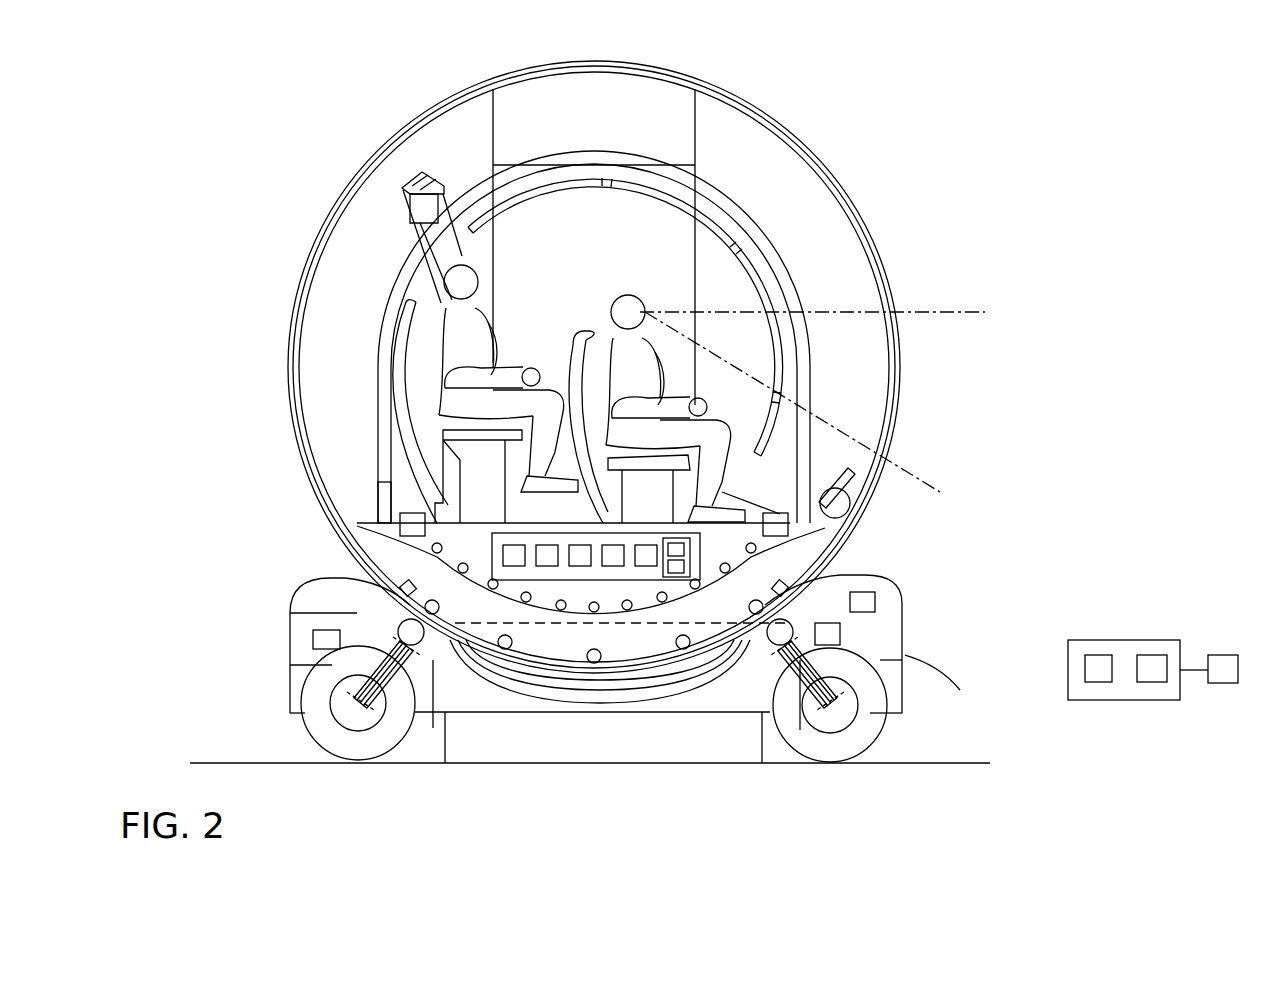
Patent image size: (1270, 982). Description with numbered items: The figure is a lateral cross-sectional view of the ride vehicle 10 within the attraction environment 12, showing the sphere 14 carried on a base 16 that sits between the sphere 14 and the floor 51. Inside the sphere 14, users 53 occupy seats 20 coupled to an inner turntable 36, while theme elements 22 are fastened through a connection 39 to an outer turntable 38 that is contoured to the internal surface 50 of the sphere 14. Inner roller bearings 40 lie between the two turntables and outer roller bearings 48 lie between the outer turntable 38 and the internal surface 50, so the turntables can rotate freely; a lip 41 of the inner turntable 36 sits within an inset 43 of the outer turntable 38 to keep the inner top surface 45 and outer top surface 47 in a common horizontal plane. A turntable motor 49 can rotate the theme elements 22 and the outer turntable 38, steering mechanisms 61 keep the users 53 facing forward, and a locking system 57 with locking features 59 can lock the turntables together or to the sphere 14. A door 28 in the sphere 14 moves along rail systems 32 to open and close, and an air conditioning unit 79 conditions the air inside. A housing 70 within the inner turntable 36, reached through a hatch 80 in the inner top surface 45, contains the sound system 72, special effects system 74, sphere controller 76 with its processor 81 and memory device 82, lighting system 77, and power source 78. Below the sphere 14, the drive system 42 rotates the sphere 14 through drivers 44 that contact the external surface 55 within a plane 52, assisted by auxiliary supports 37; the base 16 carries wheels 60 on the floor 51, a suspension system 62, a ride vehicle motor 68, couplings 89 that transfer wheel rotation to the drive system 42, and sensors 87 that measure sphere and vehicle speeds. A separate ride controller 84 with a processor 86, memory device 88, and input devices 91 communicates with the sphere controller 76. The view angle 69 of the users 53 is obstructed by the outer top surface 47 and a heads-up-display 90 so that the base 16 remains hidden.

The ride vehicle 10 is at (858, 138).
The attraction environment 12 is at (176, 725).
The sphere 14 is at (895, 305).
The base 16 is at (906, 665).
The user seats 20 is at (400, 303).
The theme elements 22 is at (782, 263).
The door 28 is at (720, 187).
The rail systems 32 is at (695, 128).
The inner turntable 36 is at (597, 665).
The auxiliary supports 37 is at (456, 700).
The outer turntable 38 is at (617, 645).
The connection 39 is at (383, 500).
The inner roller bearings 40 is at (802, 618).
The lip 41 is at (400, 515).
The drive system 42 is at (902, 622).
The inset 43 is at (432, 605).
The drivers 44 is at (800, 732).
The inner top surface 45 is at (783, 470).
The outer top surface 47 is at (852, 508).
The outer roller bearings 48 is at (680, 605).
The turntable motor 49 is at (520, 566).
The internal surface 50 is at (845, 266).
The floor 51 is at (985, 762).
The plane 52 is at (452, 665).
The users 53 is at (513, 375).
The external surface 55 is at (838, 192).
The locking system 57 is at (330, 525).
The locking features 59 is at (405, 535).
The wheels 60 is at (302, 712).
The steering mechanisms 61 is at (398, 632).
The suspension system 62 is at (395, 695).
The ride vehicle motor 68 is at (840, 635).
The view angle 69 is at (972, 322).
The housing 70 is at (640, 660).
The sound system 72 is at (553, 640).
The special effects system 74 is at (577, 640).
The sphere controller 76 is at (722, 655).
The lighting system 77 is at (614, 630).
The power source 78 is at (648, 628).
The air conditioning unit 79 is at (410, 212).
The hatch 80 is at (600, 523).
The processor 81 is at (672, 540).
The memory device 82 is at (722, 492).
The ride controller 84 is at (1130, 640).
The processor 86 is at (1098, 684).
The sensors 87 is at (313, 640).
The memory device 88 is at (1150, 684).
The couplings 89 is at (340, 685).
The heads-up-display 90 is at (932, 492).
The input devices 91 is at (1222, 685).